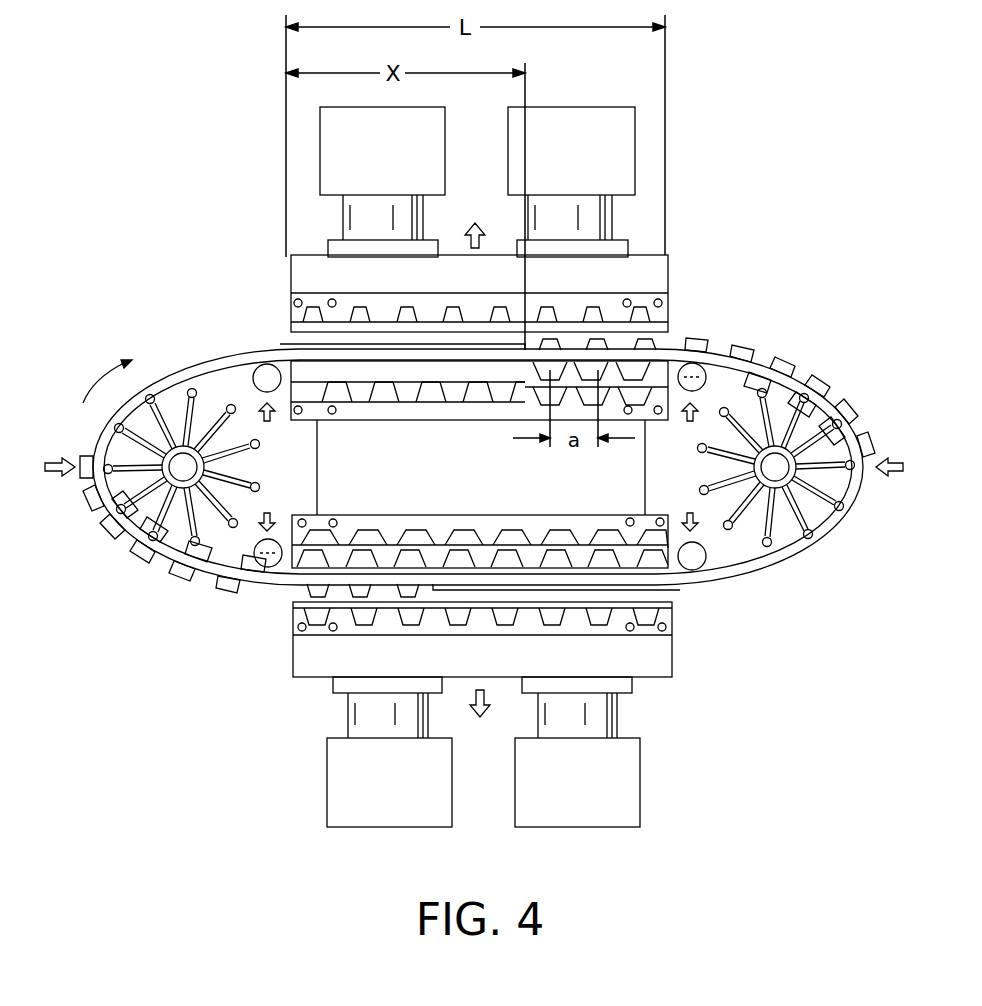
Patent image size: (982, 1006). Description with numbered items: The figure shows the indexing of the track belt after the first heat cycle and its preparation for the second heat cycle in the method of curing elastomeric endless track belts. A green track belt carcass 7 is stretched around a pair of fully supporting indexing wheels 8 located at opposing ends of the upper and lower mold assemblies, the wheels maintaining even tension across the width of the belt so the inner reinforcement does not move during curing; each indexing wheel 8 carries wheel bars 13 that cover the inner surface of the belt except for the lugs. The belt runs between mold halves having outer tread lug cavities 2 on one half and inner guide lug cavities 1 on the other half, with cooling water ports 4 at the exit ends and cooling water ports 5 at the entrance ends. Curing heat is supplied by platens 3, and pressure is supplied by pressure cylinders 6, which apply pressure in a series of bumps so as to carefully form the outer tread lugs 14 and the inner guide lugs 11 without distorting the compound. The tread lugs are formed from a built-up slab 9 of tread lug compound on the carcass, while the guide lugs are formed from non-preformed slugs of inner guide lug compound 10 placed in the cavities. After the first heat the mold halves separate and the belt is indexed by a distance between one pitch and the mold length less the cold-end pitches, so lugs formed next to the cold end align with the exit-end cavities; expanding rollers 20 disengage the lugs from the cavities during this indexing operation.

The inner guide lug cavities 1 is at (402, 403).
The outer tread lug cavities 2 is at (600, 317).
The platens 3 is at (300, 273).
The exit end cooling water ports 4 is at (661, 300).
The entrance end cooling water ports 5 is at (328, 302).
The pressure cylinders 6 is at (333, 135).
The green track belt carcass 7 is at (710, 365).
The indexing wheels 8 is at (176, 406).
The slab of tread lug compound 9 is at (198, 358).
The inner guide lug compound slugs 10 is at (503, 397).
The inner guide lugs 11 is at (840, 440).
The wheel bars 13 is at (115, 428).
The outer tread lugs 14 is at (853, 341).
The expanding rollers 20 is at (256, 367).